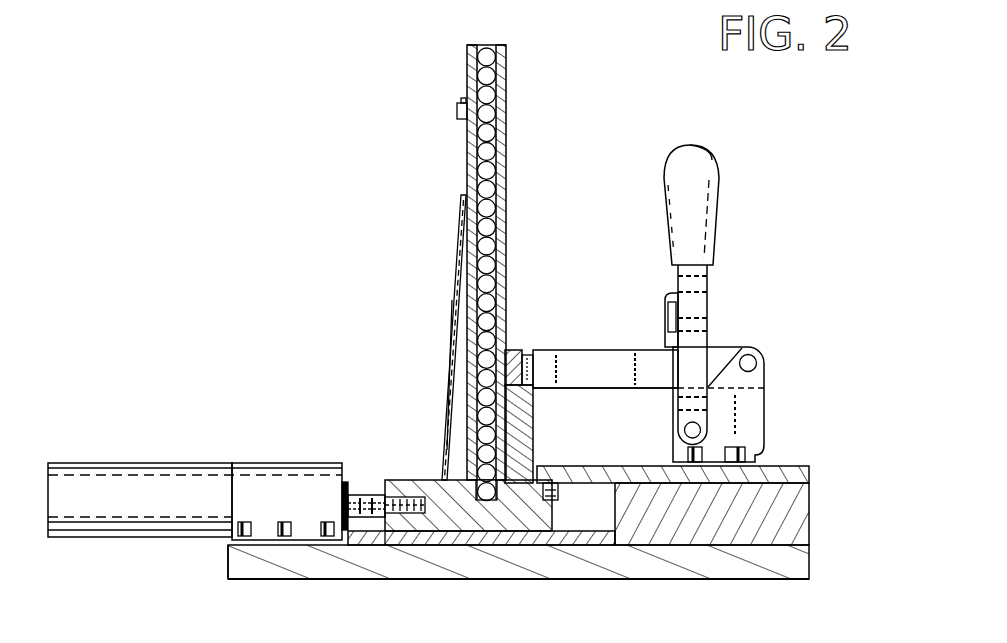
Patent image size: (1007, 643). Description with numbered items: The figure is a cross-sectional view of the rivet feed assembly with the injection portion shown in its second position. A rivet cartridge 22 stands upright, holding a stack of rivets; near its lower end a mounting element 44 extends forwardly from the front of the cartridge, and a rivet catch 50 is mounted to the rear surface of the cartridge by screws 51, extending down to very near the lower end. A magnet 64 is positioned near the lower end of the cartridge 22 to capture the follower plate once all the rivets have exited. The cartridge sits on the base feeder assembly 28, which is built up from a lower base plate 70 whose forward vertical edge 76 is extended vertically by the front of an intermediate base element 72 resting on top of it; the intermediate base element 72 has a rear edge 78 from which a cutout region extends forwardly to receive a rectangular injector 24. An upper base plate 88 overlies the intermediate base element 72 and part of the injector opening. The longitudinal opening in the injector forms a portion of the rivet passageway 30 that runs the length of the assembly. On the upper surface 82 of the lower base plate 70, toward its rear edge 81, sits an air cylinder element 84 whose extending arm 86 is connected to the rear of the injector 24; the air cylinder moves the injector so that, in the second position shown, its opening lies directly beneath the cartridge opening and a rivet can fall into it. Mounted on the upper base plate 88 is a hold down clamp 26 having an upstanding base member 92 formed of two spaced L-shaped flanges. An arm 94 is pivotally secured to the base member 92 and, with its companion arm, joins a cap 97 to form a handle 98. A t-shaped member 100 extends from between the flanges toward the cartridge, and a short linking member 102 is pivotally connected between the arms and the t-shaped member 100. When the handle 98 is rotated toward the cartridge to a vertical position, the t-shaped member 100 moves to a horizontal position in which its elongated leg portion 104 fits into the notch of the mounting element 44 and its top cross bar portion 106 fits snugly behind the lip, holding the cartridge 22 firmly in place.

The cartridge 22 is at (475, 273).
The injector 24 is at (445, 480).
The hold down clamp 26 is at (709, 280).
The base feeder assembly 28 is at (532, 509).
The rivet passageway 30 is at (558, 497).
The mounting element 44 is at (525, 430).
The rivet catch 50 is at (452, 356).
The screws 51 is at (455, 110).
The magnet 64 is at (462, 450).
The lower base plate 70 is at (800, 558).
The intermediate base element 72 is at (800, 530).
The forward vertical edge 76 is at (805, 579).
The rear edge 78 is at (385, 535).
The rear edge 81 is at (225, 560).
The upper surface 82 is at (257, 540).
The air cylinder element 84 is at (216, 502).
The extending arm 86 is at (362, 495).
The upper base plate 88 is at (800, 462).
The base member 92 is at (762, 396).
The arm 94 is at (700, 350).
The cap 97 is at (700, 158).
The handle 98 is at (729, 181).
The t-shaped member 100 is at (605, 350).
The linking member 102 is at (665, 300).
The elongated leg portion 104 is at (610, 368).
The top cross bar portion 106 is at (516, 364).